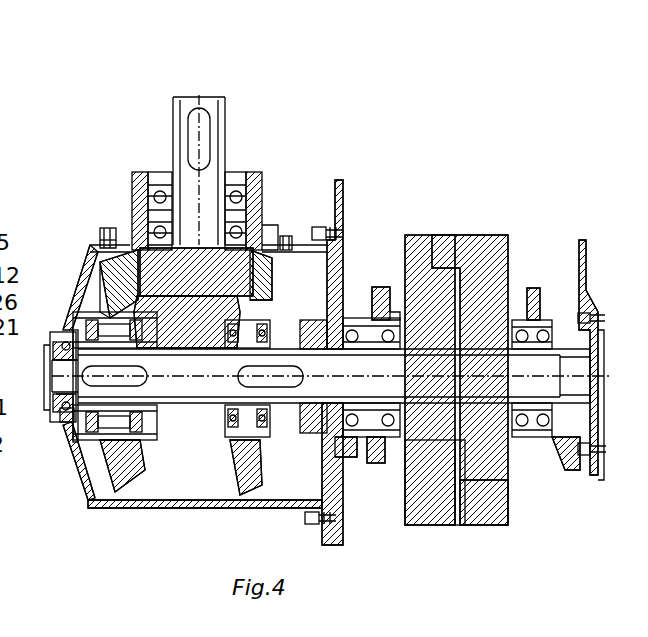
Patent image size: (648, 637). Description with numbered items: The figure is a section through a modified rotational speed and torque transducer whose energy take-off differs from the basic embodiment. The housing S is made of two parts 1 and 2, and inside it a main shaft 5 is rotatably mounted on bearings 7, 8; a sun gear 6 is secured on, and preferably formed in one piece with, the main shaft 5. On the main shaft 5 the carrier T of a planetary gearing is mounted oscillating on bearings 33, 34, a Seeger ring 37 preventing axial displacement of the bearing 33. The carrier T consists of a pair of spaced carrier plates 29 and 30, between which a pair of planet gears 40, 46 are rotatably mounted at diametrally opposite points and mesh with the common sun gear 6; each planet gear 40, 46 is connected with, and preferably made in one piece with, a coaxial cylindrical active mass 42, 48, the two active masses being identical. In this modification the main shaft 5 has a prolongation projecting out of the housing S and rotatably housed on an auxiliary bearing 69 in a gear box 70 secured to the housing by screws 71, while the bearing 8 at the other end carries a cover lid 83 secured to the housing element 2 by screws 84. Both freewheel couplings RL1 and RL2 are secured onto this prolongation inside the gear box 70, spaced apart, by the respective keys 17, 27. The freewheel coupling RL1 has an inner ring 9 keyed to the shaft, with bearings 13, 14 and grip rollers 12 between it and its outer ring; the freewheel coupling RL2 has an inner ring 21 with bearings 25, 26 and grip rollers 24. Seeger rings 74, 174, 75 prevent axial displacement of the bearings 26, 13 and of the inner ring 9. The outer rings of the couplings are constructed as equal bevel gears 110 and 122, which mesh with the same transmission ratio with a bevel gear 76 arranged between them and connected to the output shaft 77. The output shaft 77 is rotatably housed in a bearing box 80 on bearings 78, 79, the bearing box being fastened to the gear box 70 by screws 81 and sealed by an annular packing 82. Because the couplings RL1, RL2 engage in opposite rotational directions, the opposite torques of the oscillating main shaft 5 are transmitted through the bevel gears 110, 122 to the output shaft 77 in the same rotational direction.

The housing part 1 is at (345, 193).
The housing part 2 is at (592, 290).
The main shaft 5 is at (572, 388).
The sun gear 6 is at (468, 462).
The bearing 7 is at (346, 452).
The bearing 8 is at (564, 440).
The inner ring 9 is at (98, 440).
The grip rollers 12 is at (122, 418).
The bearing 13 is at (70, 333).
The bearing 14 is at (145, 438).
The key 17 is at (80, 378).
The inner ring 21 is at (228, 344).
The grip rollers 24 is at (280, 432).
The bearing 25 is at (228, 432).
The bearing 26 is at (285, 430).
The key 27 is at (302, 372).
The carrier plate 29 is at (380, 290).
The carrier plate 30 is at (535, 325).
The bearing 33 is at (372, 324).
The bearing 34 is at (522, 328).
The Seeger ring 37 is at (430, 430).
The planet gear 40 is at (484, 262).
The active mass 42 is at (424, 300).
The planet gear 46 is at (496, 515).
The active mass 48 is at (428, 478).
The auxiliary bearing 69 is at (62, 418).
The gear box 70 is at (112, 508).
The screws 71 is at (318, 226).
The Seeger ring 74 is at (306, 338).
The Seeger ring 75 is at (66, 424).
The bevel gear 76 is at (188, 290).
The output shaft 77 is at (176, 110).
The bearing 78 is at (150, 228).
The bearing 79 is at (150, 190).
The bearing box 80 is at (254, 178).
The screws 81 is at (104, 230).
The annular packing 82 is at (230, 178).
The cover lid 83 is at (600, 412).
The screws 84 is at (594, 452).
The bevel gear 110 is at (110, 290).
The bevel gear 122 is at (286, 252).
The Seeger ring 174 is at (76, 438).
The freewheel coupling RL1 is at (172, 446).
The freewheel coupling RL2 is at (163, 436).
The housing S is at (592, 262).
The carrier T is at (368, 481).